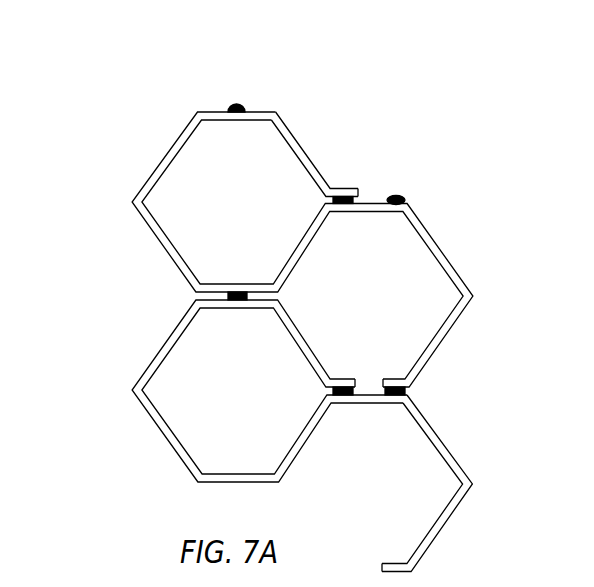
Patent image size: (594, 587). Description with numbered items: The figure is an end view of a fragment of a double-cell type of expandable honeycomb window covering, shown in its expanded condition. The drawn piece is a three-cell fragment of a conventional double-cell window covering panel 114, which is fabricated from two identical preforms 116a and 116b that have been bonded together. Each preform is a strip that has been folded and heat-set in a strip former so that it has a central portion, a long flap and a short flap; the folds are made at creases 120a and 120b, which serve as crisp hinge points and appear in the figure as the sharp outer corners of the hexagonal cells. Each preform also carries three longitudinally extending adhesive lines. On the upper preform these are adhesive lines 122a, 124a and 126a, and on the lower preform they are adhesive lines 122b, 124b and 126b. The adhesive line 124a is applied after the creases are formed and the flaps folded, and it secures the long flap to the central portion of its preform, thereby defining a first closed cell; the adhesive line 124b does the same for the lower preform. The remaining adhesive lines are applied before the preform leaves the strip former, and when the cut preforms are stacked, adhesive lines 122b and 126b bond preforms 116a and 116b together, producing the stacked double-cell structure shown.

The double-cell window covering panel 114 is at (118, 297).
The preform 116a is at (312, 152).
The preform 116b is at (443, 438).
The crease 120a is at (132, 202).
The crease 120b is at (132, 390).
The adhesive line 122a is at (244, 105).
The adhesive line 122b is at (248, 296).
The adhesive line 124a is at (333, 200).
The adhesive line 124b is at (333, 391).
The adhesive line 126a is at (404, 198).
The adhesive line 126b is at (405, 392).